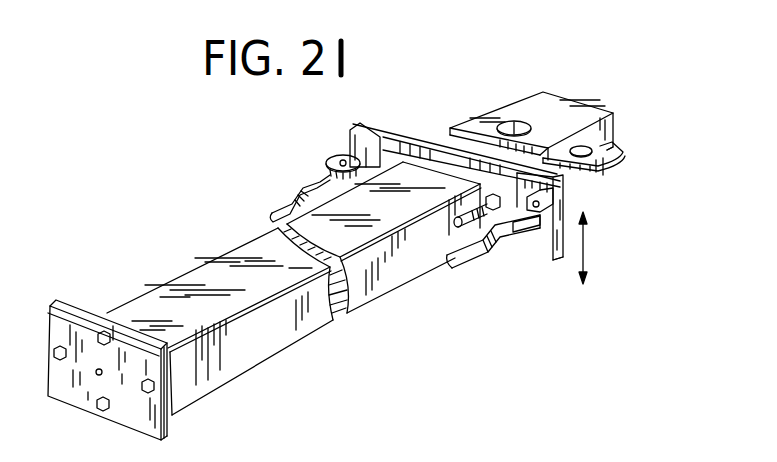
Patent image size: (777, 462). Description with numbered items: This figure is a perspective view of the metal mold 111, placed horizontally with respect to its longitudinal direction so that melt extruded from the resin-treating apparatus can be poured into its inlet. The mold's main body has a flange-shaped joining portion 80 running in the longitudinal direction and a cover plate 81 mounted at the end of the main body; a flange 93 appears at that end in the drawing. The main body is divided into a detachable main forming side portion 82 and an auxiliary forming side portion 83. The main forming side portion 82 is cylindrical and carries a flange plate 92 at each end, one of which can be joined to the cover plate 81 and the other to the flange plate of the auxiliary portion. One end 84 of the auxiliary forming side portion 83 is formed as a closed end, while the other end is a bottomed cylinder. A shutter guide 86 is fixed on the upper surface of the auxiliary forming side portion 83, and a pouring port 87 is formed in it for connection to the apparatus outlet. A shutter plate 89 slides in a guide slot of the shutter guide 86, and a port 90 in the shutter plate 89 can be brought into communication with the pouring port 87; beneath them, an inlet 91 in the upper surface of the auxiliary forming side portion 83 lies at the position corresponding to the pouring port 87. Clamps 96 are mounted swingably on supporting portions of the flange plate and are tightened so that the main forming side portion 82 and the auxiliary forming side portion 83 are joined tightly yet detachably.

The flange-shaped joining portion 80 is at (350, 128).
The cover plate 81 is at (62, 322).
The main forming side portion 82 is at (183, 285).
The auxiliary forming side portion 83 is at (597, 108).
The one end of the auxiliary forming side portion 84 is at (570, 93).
The shutter guide 86 is at (473, 127).
The pouring port 87 is at (508, 122).
The shutter plate 89 is at (620, 153).
The port 90 is at (610, 138).
The inlet 91 is at (515, 132).
The flange plate 92 is at (410, 158).
The top flange 93 is at (89, 318).
The clamp 96 is at (300, 165).
The metal mold 111 is at (210, 250).